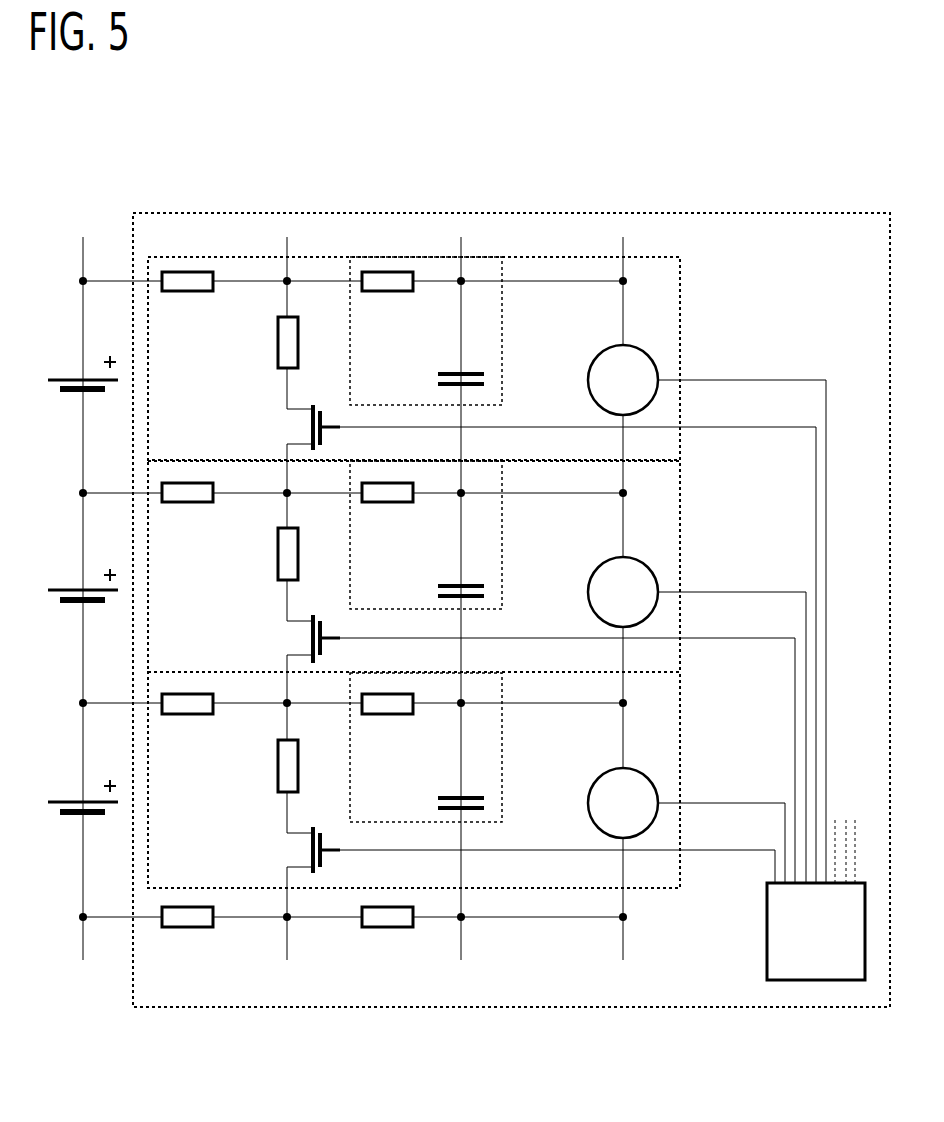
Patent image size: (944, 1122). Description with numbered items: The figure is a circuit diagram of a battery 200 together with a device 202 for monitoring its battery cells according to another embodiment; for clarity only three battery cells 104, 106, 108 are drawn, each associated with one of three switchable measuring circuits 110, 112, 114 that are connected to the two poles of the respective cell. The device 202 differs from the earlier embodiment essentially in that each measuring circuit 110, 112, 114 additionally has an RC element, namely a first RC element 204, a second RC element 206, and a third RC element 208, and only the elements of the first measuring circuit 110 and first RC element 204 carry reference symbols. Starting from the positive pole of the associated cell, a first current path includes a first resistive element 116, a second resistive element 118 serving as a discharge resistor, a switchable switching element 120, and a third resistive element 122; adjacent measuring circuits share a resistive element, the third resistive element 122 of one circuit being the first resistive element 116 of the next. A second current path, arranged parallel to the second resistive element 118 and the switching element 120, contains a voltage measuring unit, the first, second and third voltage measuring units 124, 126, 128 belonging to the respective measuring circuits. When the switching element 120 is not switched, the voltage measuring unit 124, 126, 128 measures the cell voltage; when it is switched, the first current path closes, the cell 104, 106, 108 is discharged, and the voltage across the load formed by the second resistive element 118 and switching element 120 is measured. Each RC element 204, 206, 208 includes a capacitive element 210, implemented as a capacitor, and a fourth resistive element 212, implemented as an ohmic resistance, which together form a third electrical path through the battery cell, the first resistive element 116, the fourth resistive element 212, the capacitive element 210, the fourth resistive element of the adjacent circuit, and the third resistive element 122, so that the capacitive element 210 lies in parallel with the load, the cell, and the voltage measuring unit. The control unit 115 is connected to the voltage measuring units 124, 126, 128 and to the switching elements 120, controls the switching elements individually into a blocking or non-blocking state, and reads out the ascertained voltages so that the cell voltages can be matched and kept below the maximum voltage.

The battery 200 is at (165, 157).
The device for monitoring 202 is at (509, 213).
The battery cell 104 is at (62, 378).
The battery cell 106 is at (62, 588).
The battery cell 108 is at (62, 800).
The first measuring circuit 110 is at (680, 318).
The second measuring circuit 112 is at (680, 530).
The third measuring circuit 114 is at (680, 740).
The control unit 115 is at (842, 947).
The first resistive element 116 is at (188, 292).
The second resistive element 118 is at (278, 355).
The switching element 120 is at (312, 427).
The third resistive element 122 is at (188, 503).
The first voltage measuring unit 124 is at (650, 352).
The second voltage measuring unit 126 is at (650, 564).
The third voltage measuring unit 128 is at (650, 776).
The first RC element 204 is at (502, 318).
The second RC element 206 is at (502, 530).
The third RC element 208 is at (502, 742).
The capacitive element 210 is at (474, 372).
The fourth resistive element 212 is at (388, 292).